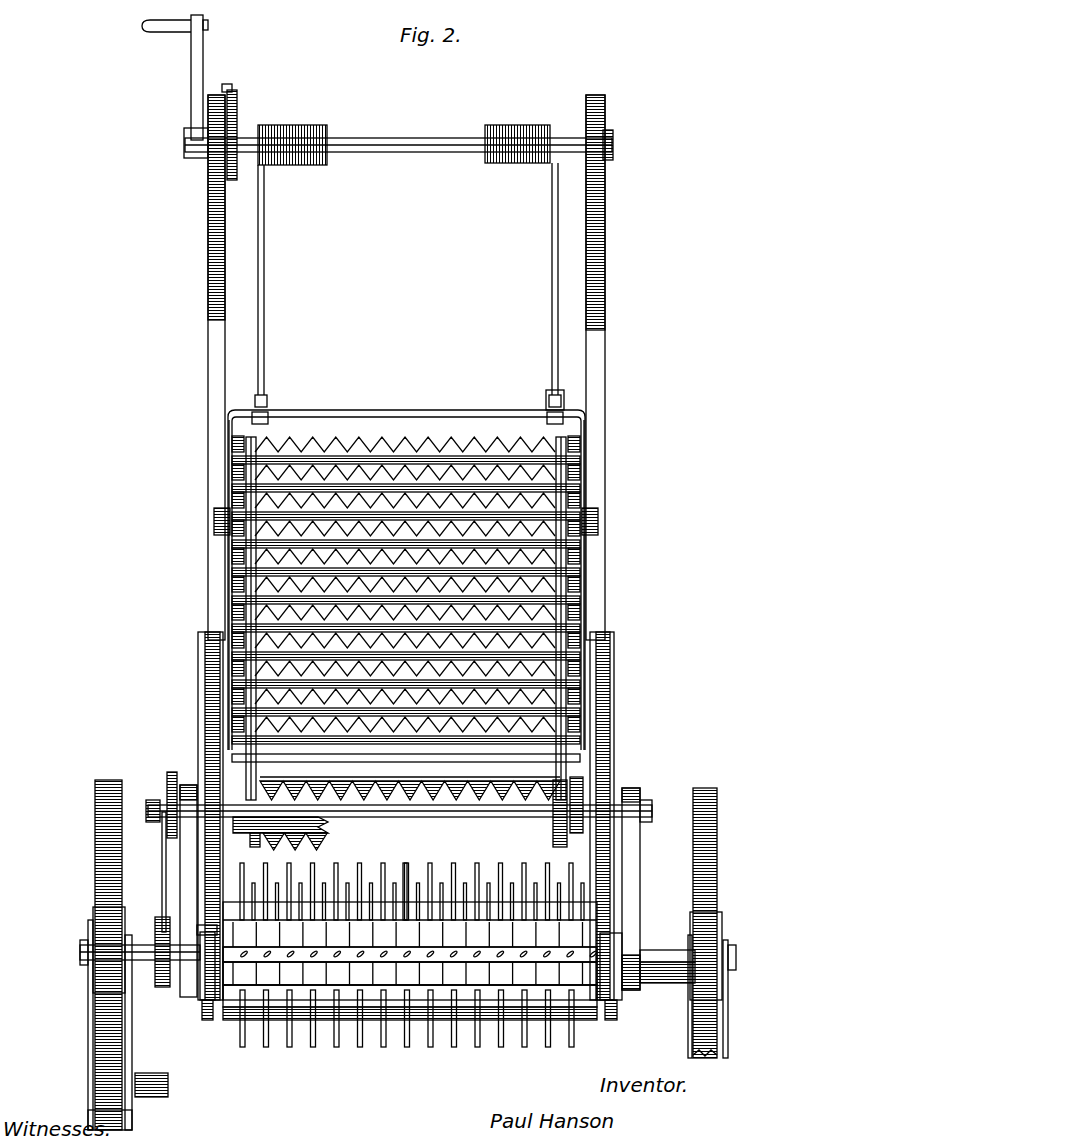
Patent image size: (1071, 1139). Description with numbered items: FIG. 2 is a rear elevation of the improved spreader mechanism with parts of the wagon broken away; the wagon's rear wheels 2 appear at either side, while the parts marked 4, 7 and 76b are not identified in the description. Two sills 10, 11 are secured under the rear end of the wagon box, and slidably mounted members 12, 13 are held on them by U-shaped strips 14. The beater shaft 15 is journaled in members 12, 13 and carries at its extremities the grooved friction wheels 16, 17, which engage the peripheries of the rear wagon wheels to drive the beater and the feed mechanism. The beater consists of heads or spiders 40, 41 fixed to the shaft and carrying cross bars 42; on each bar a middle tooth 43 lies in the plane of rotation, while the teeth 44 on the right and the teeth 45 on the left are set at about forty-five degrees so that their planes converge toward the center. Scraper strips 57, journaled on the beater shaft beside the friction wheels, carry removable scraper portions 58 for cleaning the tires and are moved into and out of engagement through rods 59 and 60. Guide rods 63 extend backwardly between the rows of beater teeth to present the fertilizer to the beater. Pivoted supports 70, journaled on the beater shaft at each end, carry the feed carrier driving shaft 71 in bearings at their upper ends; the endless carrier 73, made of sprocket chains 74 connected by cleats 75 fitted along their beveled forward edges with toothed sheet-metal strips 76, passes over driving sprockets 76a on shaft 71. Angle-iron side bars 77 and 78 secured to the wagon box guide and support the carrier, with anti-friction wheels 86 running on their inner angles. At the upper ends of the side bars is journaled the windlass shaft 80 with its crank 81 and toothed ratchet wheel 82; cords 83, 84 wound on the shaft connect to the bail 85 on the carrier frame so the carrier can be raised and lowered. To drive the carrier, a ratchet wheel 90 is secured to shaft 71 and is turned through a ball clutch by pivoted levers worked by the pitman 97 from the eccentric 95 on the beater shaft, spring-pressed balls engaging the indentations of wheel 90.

The wheel 2 is at (100, 836).
The axle stub 4 is at (168, 1086).
The post sleeve 7 is at (205, 700).
The sill 10 is at (728, 1032).
The sill 11 is at (205, 988).
The slidably mounted member 12 is at (692, 972).
The slidably mounted member 13 is at (203, 922).
The U-shaped strip 14 is at (207, 1020).
The beater shaft 15 is at (668, 950).
The grooved friction wheel 16 is at (722, 946).
The grooved friction wheel 17 is at (100, 932).
The beater head 40 is at (596, 936).
The beater head 41 is at (238, 1000).
The cross bar 42 is at (253, 1000).
The middle tooth 43 is at (398, 960).
The right-hand tooth 44 is at (492, 968).
The left-hand tooth 45 is at (313, 1046).
The scraper strip 57 is at (90, 1018).
The scraper portion 58 is at (122, 1120).
The rod 59 is at (150, 962).
The rod 60 is at (610, 996).
The guide rod 63 is at (232, 94).
The pivoted support 70 is at (185, 860).
The feed carrier driving shaft 71 is at (495, 816).
The endless carrier belt 73 is at (228, 556).
The sprocket chain 74 is at (262, 420).
The cleat 75 is at (445, 480).
The toothed strip 76 is at (372, 450).
The driving sprocket 76a is at (300, 848).
The gear 76b is at (560, 820).
The side bar 77 is at (210, 260).
The side bar 78 is at (600, 254).
The windlass shaft 80 is at (423, 140).
The crank 81 is at (200, 70).
The toothed ratchet wheel 82 is at (240, 124).
The cord 83 is at (264, 218).
The cord 84 is at (551, 236).
The bail 85 is at (547, 408).
The anti-friction wheel 86 is at (214, 520).
The ratchet wheel 90 is at (172, 772).
The eccentric 95 is at (160, 936).
The pitman 97 is at (163, 902).